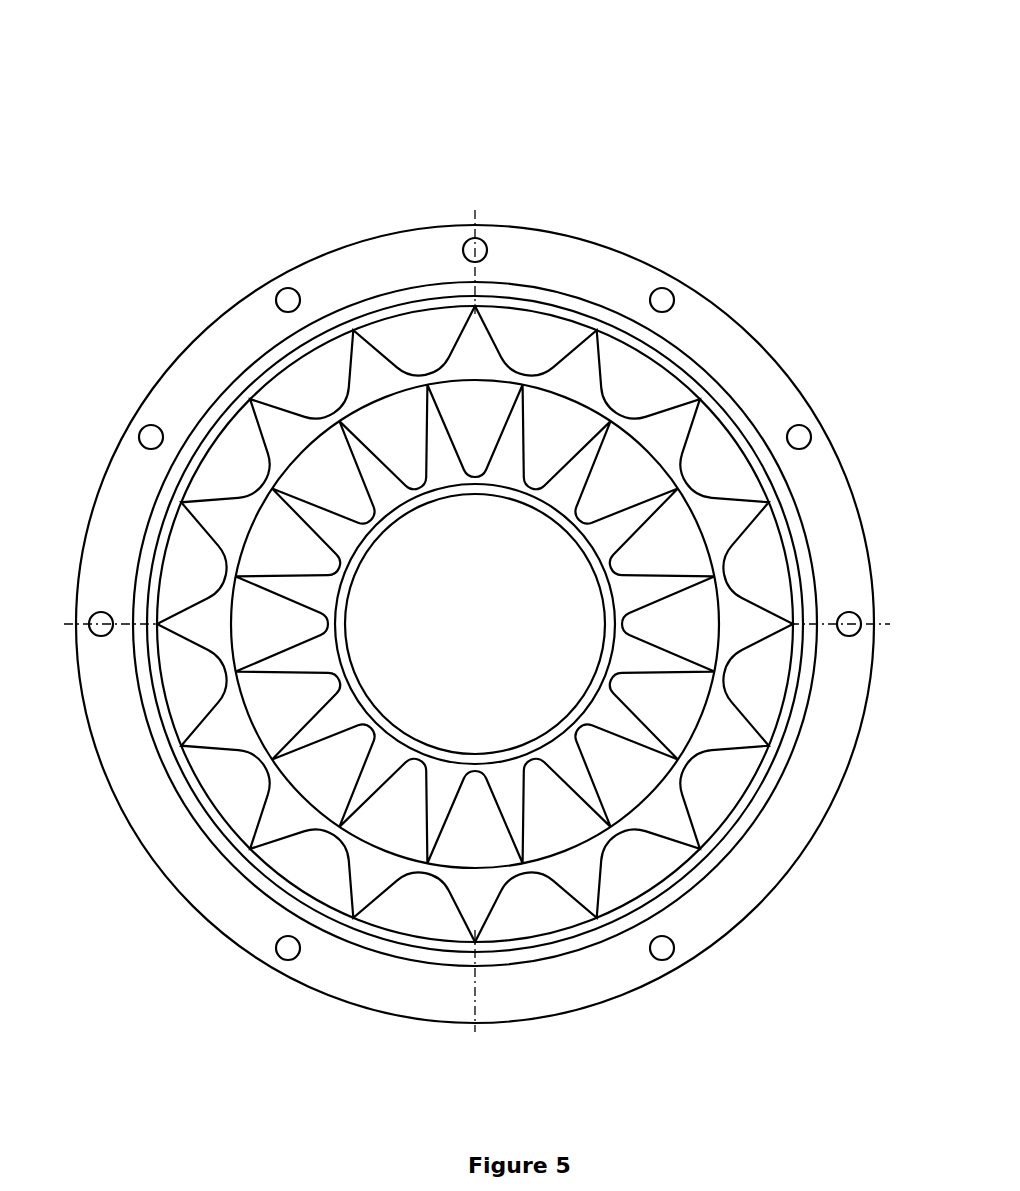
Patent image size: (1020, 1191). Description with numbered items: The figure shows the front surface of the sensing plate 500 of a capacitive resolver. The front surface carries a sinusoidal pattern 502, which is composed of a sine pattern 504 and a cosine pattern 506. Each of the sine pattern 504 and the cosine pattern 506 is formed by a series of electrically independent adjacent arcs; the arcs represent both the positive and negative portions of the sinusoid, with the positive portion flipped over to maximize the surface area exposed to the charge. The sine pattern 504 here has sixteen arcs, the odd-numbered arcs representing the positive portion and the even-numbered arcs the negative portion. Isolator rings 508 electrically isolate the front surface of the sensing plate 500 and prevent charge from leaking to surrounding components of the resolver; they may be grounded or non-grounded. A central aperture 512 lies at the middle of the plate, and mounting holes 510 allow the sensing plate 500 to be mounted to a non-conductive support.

The sensing plate 500 is at (767, 37).
The sinusoidal pattern 502 is at (432, 377).
The sine pattern 504 is at (332, 684).
The cosine pattern 506 is at (330, 682).
The isolator rings 508 is at (790, 735).
The mounting holes 510 is at (668, 289).
The central aperture 512 is at (475, 624).